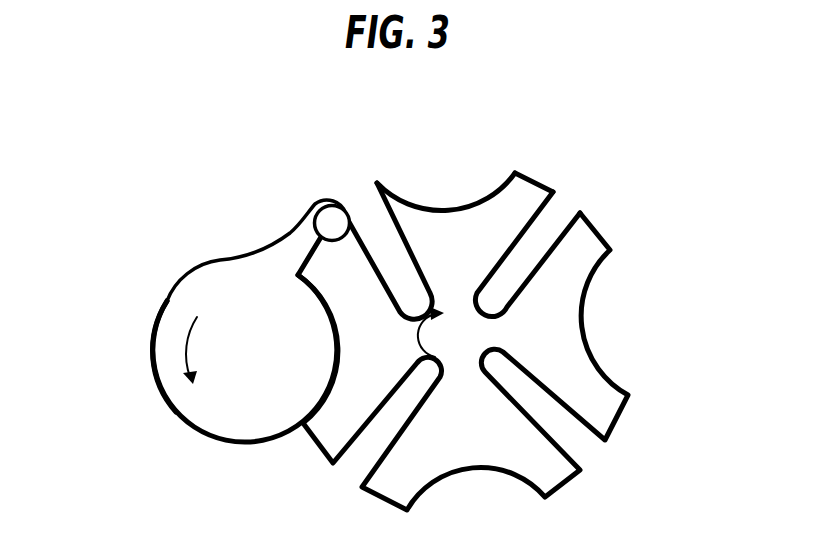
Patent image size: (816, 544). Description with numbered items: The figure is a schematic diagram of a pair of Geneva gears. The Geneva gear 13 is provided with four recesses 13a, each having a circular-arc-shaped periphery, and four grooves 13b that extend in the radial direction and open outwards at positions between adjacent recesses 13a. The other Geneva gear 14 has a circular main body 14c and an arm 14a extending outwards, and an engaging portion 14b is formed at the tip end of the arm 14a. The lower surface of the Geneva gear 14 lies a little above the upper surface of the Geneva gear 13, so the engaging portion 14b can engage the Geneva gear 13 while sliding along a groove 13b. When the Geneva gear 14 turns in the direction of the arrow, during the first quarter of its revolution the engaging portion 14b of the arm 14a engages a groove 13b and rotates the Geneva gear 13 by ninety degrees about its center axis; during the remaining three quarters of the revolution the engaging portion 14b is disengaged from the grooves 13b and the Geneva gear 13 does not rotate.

The Geneva gear 13 is at (585, 321).
The recess 13a is at (450, 208).
The groove 13b is at (548, 222).
The Geneva gear 14 is at (247, 403).
The arm 14a is at (299, 238).
The engaging portion 14b is at (338, 215).
The circular main body 14c is at (152, 352).